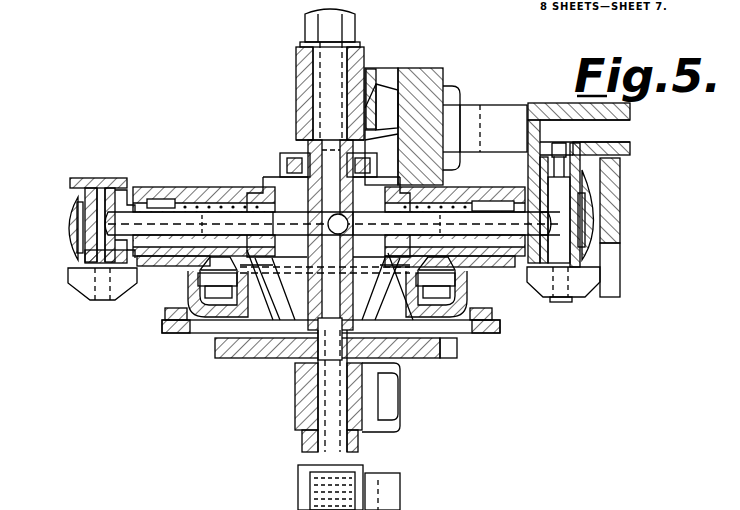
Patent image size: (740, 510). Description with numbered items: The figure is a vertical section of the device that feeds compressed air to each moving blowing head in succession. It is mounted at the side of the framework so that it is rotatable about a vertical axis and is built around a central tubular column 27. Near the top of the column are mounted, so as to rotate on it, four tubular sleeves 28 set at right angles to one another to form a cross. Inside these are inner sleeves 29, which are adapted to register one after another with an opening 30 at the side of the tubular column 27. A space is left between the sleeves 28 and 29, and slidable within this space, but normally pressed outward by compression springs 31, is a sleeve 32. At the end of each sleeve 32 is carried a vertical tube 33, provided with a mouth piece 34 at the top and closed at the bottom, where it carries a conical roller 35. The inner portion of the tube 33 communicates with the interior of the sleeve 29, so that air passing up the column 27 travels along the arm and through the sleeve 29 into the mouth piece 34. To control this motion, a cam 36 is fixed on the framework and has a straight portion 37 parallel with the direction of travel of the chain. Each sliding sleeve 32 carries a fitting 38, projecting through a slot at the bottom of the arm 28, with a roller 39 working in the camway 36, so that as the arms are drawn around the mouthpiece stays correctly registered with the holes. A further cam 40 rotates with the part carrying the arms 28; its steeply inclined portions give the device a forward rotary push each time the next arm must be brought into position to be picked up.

The central tubular column 27 is at (335, 410).
The tubular sleeves 28 is at (217, 187).
The inner sleeves 29 is at (188, 187).
The opening 30 is at (332, 220).
The compression springs 31 is at (240, 195).
The sleeve 32 is at (150, 199).
The vertical tube 33 is at (72, 215).
The mouth piece 34 is at (90, 178).
The conical roller 35 is at (95, 283).
The cam 36 is at (455, 290).
The straight portion 37 is at (460, 275).
The fitting 38 is at (480, 268).
The roller 39 is at (445, 305).
The cam 40 is at (405, 348).